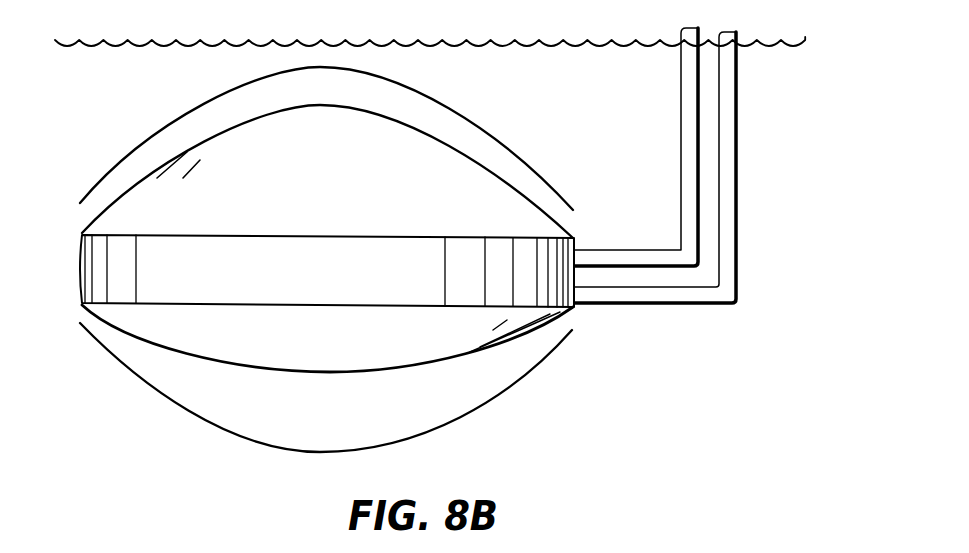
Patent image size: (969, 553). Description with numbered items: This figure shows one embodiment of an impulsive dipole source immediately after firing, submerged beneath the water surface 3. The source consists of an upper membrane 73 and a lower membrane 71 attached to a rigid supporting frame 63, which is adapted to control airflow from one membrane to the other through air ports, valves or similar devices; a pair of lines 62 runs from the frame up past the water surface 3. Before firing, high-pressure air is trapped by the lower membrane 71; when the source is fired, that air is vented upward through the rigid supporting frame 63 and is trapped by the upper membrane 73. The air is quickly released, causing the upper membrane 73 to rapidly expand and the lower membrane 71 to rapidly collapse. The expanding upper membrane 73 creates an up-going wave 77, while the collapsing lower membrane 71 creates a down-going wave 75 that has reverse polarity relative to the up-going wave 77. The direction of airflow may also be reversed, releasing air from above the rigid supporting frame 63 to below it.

The water surface 3 is at (172, 43).
The tubes 62 is at (702, 112).
The rigid supporting frame 63 is at (80, 270).
The lower membrane 71 is at (88, 316).
The upper membrane 73 is at (90, 229).
The down-going wave 75 is at (126, 367).
The up-going wave 77 is at (118, 166).